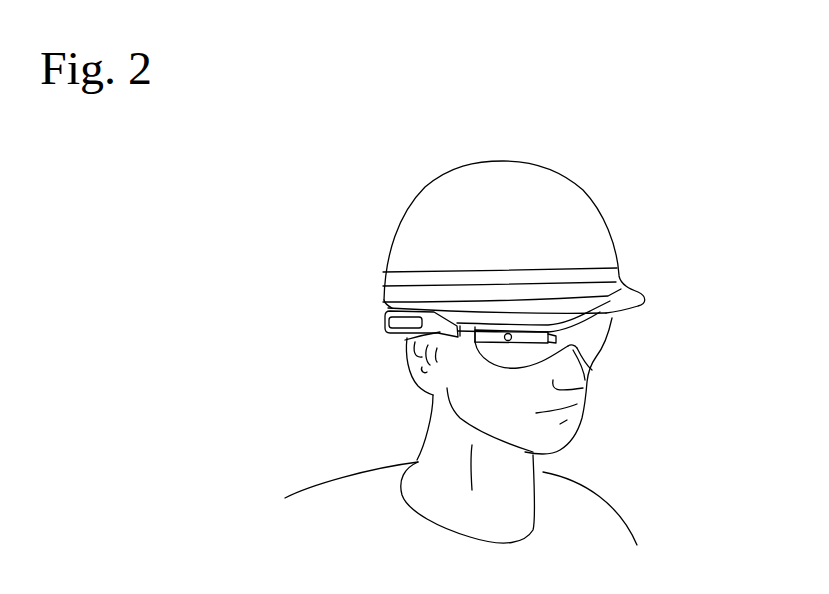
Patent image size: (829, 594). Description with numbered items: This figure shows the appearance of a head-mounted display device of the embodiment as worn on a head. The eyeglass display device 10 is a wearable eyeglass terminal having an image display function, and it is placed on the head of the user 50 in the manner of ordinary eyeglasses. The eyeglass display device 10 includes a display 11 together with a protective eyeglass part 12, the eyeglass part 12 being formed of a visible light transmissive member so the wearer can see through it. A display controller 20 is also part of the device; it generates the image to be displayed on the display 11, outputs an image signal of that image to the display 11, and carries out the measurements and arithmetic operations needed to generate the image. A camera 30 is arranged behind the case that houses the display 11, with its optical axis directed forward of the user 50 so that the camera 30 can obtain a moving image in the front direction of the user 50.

The eyeglass display device 10 is at (500, 345).
The display 11 is at (593, 349).
The eyeglass part 12 is at (595, 337).
The display controller 20 is at (438, 328).
The camera 30 is at (477, 347).
The user 50 is at (610, 228).